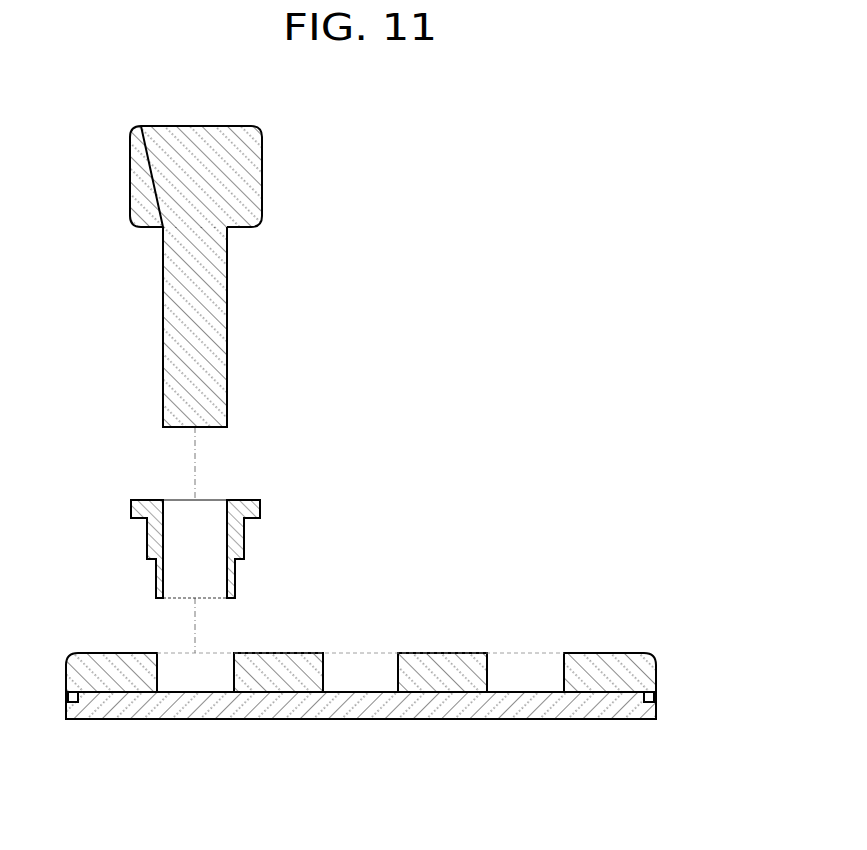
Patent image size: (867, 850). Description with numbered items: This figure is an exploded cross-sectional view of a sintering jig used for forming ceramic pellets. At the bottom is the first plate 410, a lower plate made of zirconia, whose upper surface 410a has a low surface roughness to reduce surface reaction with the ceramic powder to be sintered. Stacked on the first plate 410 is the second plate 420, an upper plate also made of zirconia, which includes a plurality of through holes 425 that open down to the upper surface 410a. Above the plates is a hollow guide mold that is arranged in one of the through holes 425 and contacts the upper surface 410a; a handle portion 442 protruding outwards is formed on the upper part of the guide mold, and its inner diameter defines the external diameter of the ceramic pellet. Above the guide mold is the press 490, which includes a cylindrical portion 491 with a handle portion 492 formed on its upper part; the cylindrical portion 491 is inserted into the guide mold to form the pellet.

The press 490 is at (268, 276).
The cylindrical portion 491 is at (254, 327).
The handle portion 492 is at (252, 177).
The handle portion 442 is at (255, 511).
The second plate 420 is at (650, 677).
The first plate 410 is at (650, 712).
The upper surface 410a is at (540, 692).
The through hole 425 is at (185, 675).